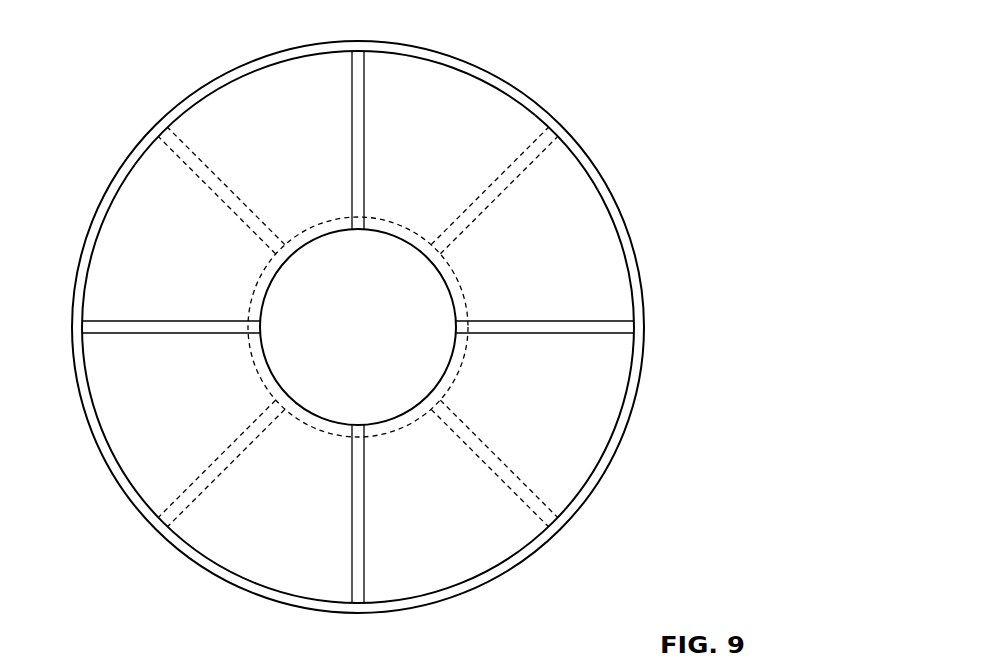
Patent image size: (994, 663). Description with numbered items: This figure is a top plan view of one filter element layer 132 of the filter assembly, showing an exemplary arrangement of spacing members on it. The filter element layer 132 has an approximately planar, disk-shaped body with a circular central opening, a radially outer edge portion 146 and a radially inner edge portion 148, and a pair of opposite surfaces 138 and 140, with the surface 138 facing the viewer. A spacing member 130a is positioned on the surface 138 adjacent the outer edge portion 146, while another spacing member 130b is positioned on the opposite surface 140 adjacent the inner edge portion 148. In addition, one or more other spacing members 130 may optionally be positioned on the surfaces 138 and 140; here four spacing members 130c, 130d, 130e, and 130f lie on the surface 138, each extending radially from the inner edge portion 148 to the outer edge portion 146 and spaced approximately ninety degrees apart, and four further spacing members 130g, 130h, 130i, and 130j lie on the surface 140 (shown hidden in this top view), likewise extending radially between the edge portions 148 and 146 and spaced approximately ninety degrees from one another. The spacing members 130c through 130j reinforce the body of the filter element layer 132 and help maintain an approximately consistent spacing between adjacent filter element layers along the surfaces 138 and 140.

The radially outer edge portion 146 is at (445, 50).
The spacing member 130 is at (498, 86).
The spacing member 130a is at (580, 158).
The spacing member 130b is at (302, 232).
The spacing member 130c is at (350, 68).
The spacing member 130d is at (110, 328).
The spacing member 130e is at (356, 584).
The spacing member 130f is at (592, 320).
The spacing member 130g is at (184, 150).
The spacing member 130h is at (175, 505).
The spacing member 130i is at (532, 527).
The spacing member 130j is at (527, 153).
The filter element layer 132 is at (571, 458).
The surface 138 is at (584, 410).
The surface 140 is at (418, 610).
The radially inner edge portion 148 is at (358, 231).